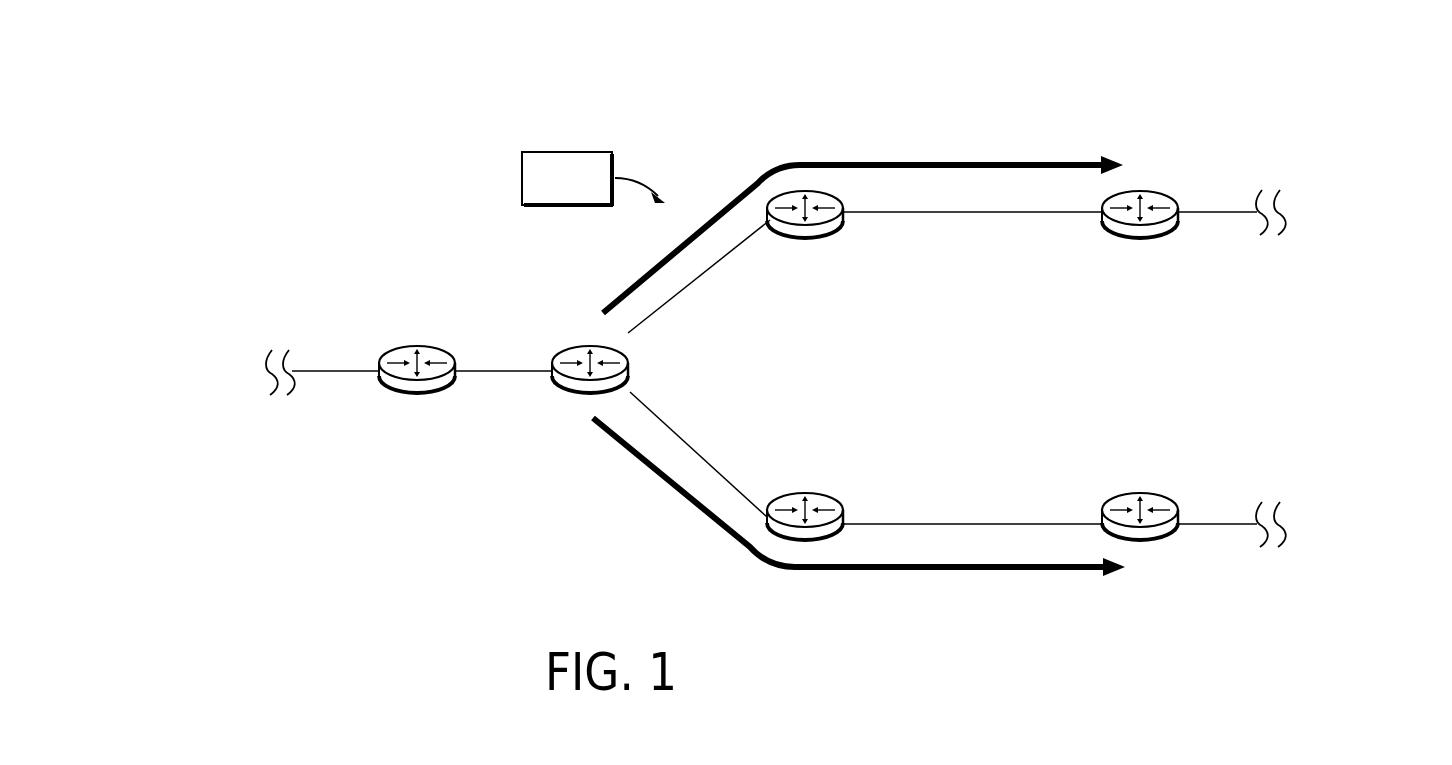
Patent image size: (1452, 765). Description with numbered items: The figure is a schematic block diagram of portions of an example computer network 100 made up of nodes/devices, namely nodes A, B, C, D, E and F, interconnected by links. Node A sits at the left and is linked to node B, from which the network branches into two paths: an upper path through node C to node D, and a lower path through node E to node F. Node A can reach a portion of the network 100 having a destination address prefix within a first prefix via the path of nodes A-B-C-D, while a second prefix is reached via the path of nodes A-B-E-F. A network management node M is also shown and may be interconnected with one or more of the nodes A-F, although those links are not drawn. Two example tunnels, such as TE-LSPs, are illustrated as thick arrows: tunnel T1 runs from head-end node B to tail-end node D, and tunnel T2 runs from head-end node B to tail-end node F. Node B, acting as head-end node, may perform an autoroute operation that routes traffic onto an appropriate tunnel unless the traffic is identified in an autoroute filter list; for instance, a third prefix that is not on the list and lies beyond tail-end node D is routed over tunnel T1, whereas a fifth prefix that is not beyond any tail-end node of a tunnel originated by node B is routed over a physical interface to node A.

The computer network 100 is at (1253, 82).
The node A is at (400, 394).
The node B is at (575, 394).
The node C is at (825, 243).
The node D is at (1125, 243).
The node E is at (825, 492).
The node F is at (1125, 492).
The network management node M is at (593, 179).
The tunnel T1 is at (931, 160).
The tunnel T2 is at (931, 572).